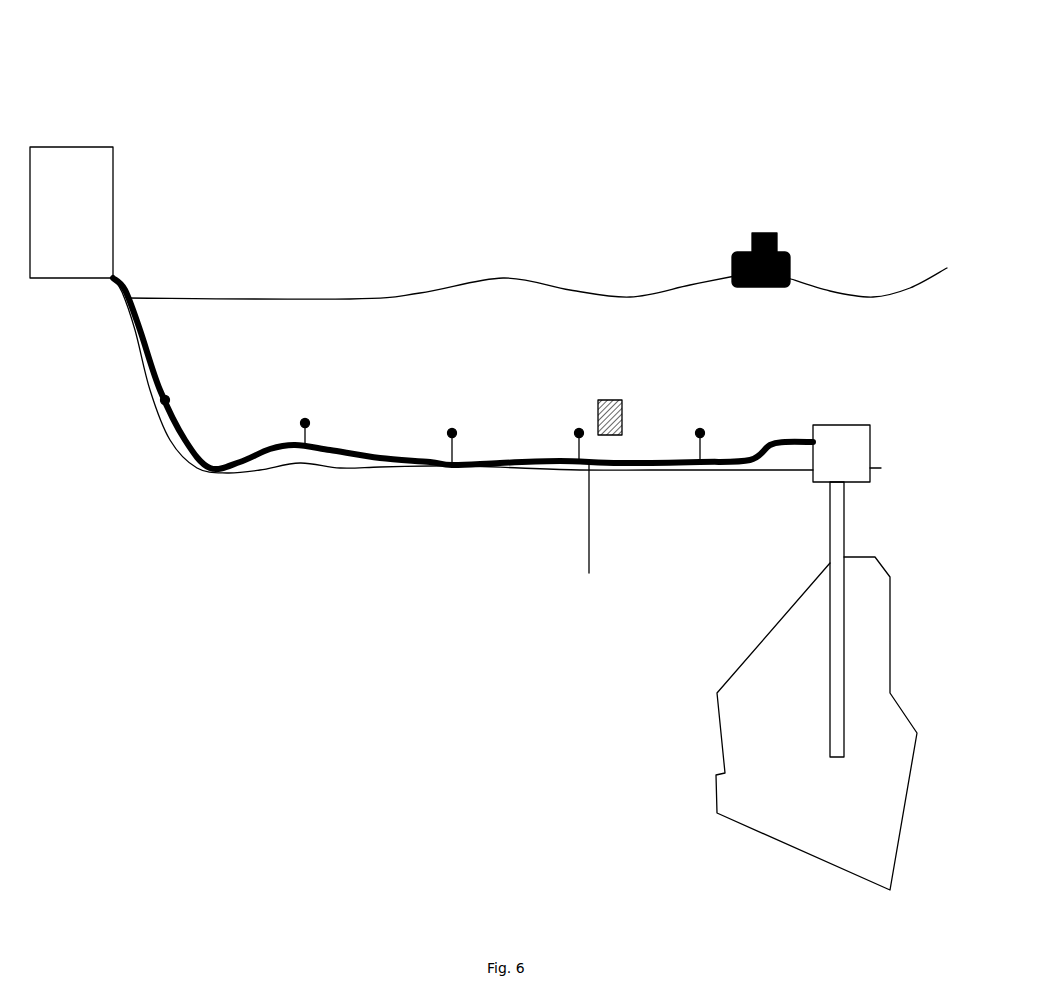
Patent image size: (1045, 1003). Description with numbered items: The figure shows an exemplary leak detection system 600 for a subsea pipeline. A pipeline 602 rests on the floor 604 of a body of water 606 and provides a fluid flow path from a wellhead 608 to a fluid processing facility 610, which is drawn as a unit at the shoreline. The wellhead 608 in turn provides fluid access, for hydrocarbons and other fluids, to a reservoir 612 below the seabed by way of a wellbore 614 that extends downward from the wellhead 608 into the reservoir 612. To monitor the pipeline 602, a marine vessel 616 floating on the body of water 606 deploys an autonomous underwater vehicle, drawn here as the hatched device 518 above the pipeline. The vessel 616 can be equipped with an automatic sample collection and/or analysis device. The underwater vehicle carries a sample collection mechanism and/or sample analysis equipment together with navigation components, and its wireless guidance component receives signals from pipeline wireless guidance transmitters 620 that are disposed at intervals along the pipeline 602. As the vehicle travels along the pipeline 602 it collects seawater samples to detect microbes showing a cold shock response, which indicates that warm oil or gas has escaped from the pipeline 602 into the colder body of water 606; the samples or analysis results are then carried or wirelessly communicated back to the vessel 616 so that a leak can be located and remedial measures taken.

The leak detection system 600 is at (720, 73).
The pipeline 602 is at (595, 536).
The floor 604 is at (298, 465).
The body of water 606 is at (452, 266).
The wellhead 608 is at (841, 453).
The fluid processing facility 610 is at (71, 212).
The reservoir 612 is at (780, 648).
The wellbore 614 is at (828, 520).
The marine vessel 616 is at (775, 221).
The underwater device 518 is at (623, 388).
The pipeline wireless guidance transmitters 620 is at (443, 421).